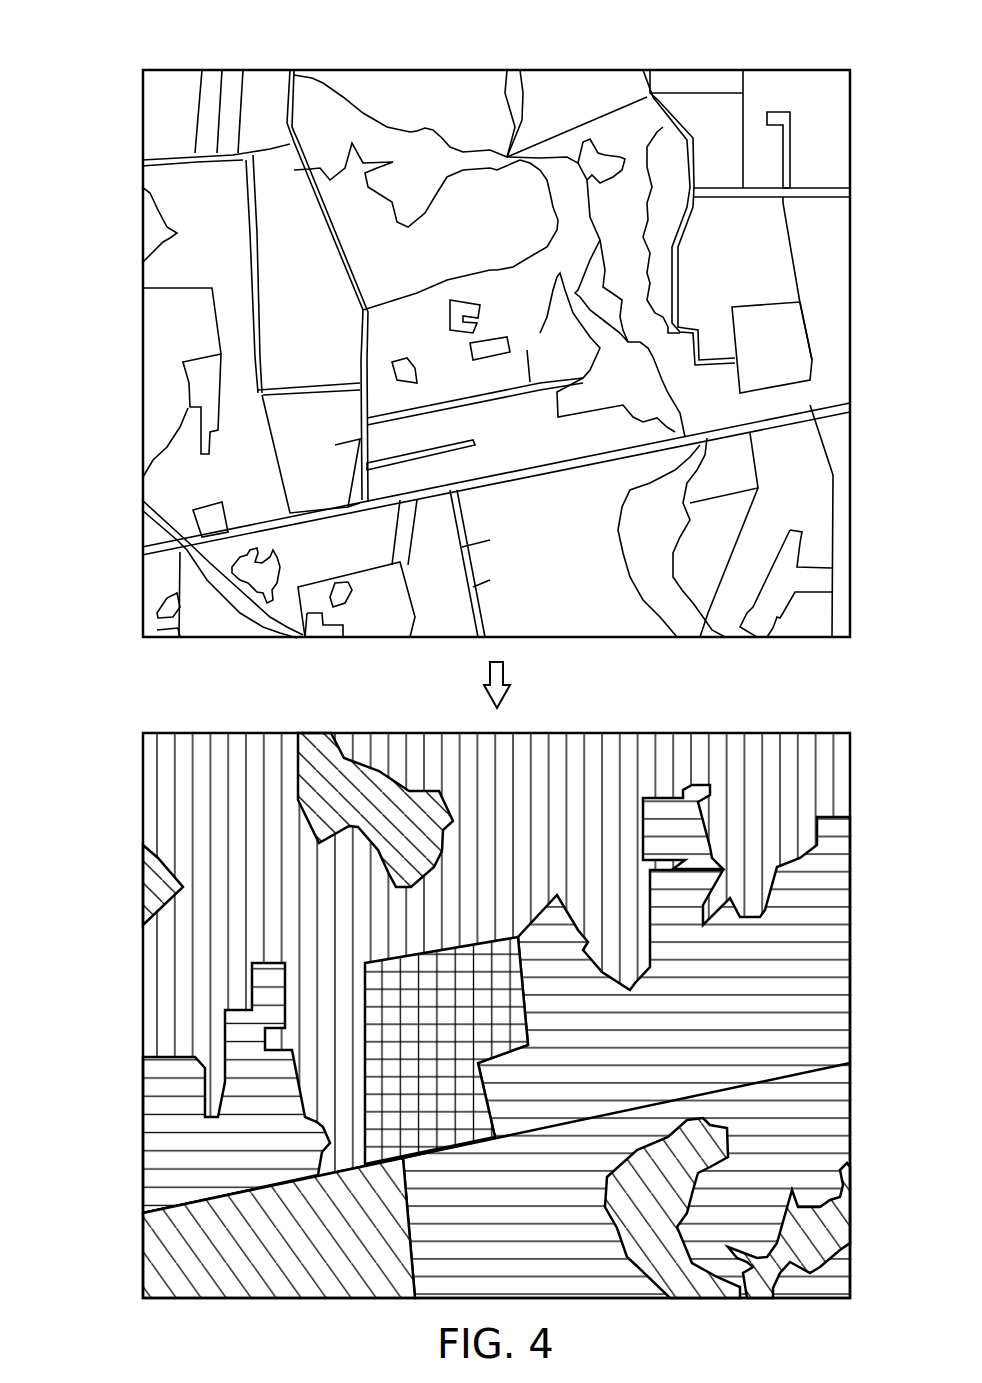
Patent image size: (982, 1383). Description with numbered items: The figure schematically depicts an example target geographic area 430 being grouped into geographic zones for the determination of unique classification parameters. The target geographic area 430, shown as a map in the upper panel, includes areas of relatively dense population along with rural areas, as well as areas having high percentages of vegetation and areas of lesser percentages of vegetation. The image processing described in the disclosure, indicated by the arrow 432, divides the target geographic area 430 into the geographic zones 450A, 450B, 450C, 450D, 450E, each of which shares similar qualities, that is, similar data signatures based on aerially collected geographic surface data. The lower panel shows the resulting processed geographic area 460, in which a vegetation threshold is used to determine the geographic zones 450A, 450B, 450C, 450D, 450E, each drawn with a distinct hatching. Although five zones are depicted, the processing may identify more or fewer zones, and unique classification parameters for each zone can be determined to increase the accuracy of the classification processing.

The target geographic area 430 is at (624, 66).
The arrow 432 is at (504, 672).
The processed geographic area 460 is at (446, 981).
The geographic zone 450A is at (741, 1017).
The geographic zone 450B is at (316, 1257).
The geographic zone 450C is at (470, 1039).
The geographic zone 450D is at (258, 809).
The geographic zone 450E is at (394, 822).